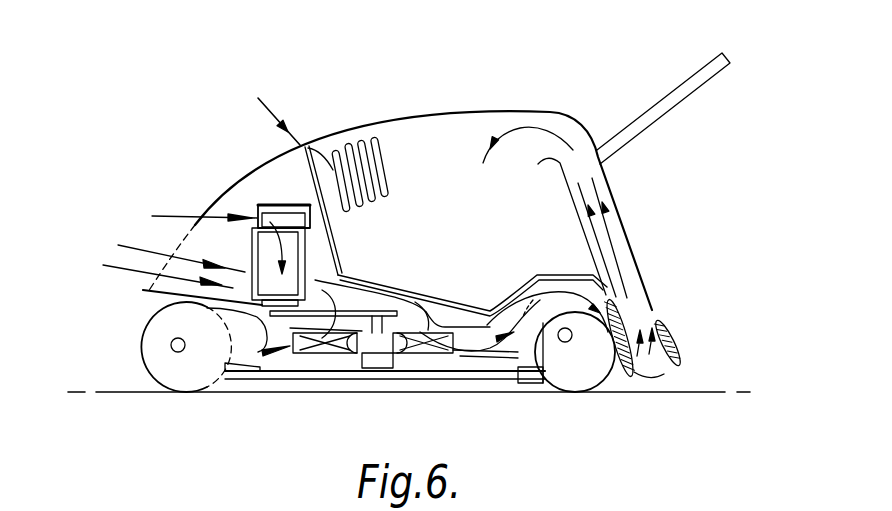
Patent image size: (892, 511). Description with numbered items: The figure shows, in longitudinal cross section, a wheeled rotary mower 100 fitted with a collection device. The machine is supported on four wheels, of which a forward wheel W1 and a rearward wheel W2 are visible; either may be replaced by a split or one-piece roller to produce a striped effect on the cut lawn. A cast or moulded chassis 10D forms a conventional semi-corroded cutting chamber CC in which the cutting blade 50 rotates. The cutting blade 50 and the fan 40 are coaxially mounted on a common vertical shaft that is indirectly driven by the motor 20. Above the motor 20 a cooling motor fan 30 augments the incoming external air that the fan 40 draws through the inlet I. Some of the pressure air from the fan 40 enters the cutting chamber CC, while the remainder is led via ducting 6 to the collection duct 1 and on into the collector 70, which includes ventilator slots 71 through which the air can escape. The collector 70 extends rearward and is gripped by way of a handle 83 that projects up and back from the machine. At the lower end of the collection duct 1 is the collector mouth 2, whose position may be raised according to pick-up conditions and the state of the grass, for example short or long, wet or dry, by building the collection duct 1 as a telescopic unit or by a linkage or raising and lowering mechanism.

The vacuum cleaner housing 100 is at (486, 106).
The collector 70 is at (470, 247).
The handle 83 is at (686, 95).
The ventilator slots 71 is at (378, 163).
The cooling motor fan 30 is at (252, 217).
The motor 20 is at (258, 254).
The inlet I is at (152, 280).
The chassis 10D is at (140, 326).
The forward wheel W1 is at (170, 365).
The cutting chamber CC is at (255, 358).
The cutting blade 50 is at (337, 375).
The fan 40 is at (373, 345).
The ducting 6 is at (497, 357).
The rearward wheel W2 is at (580, 372).
The collection duct 1 is at (633, 297).
The collector mouth 2 is at (650, 370).